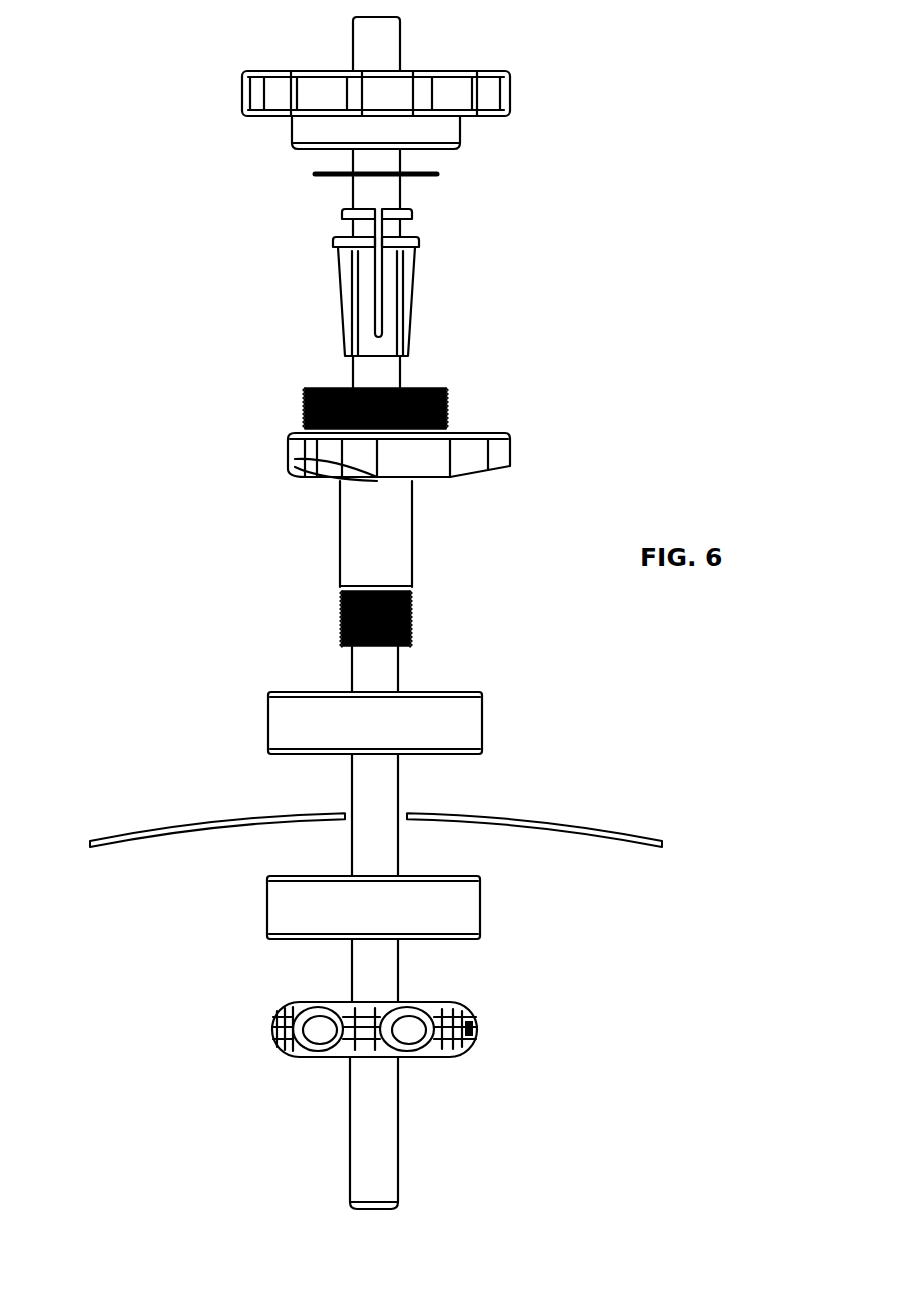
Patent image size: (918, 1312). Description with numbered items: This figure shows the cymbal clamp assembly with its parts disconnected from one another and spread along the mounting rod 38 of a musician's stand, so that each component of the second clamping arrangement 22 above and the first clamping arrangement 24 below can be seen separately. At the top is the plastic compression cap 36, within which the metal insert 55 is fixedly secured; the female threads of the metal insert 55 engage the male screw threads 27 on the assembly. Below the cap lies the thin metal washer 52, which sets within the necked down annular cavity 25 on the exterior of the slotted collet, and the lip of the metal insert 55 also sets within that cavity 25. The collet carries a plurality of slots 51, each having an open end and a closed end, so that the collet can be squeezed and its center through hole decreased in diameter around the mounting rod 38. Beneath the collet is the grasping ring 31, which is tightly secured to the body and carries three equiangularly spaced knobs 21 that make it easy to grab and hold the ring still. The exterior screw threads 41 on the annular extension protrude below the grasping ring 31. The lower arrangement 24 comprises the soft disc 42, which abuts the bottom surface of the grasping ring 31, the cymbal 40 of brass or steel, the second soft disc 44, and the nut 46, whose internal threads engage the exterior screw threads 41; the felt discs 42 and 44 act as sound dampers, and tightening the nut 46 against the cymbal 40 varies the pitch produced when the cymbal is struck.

The knobs 21 is at (500, 452).
The second clamping arrangement 22 is at (493, 45).
The first clamping arrangement 24 is at (510, 485).
The necked down annular cavity 25 is at (400, 238).
The male screw threads 27 is at (447, 407).
The grasping ring 31 is at (410, 465).
The plastic compression cap 36 is at (323, 93).
The mounting rod 38 is at (368, 790).
The cymbal 40 is at (188, 823).
The exterior screw threads 41 is at (412, 623).
The soft disc 42 is at (320, 712).
The soft disc 44 is at (345, 895).
The nut 46 is at (317, 1033).
The slots 51 is at (378, 282).
The thin metal washer 52 is at (327, 173).
The metal insert 55 is at (453, 133).